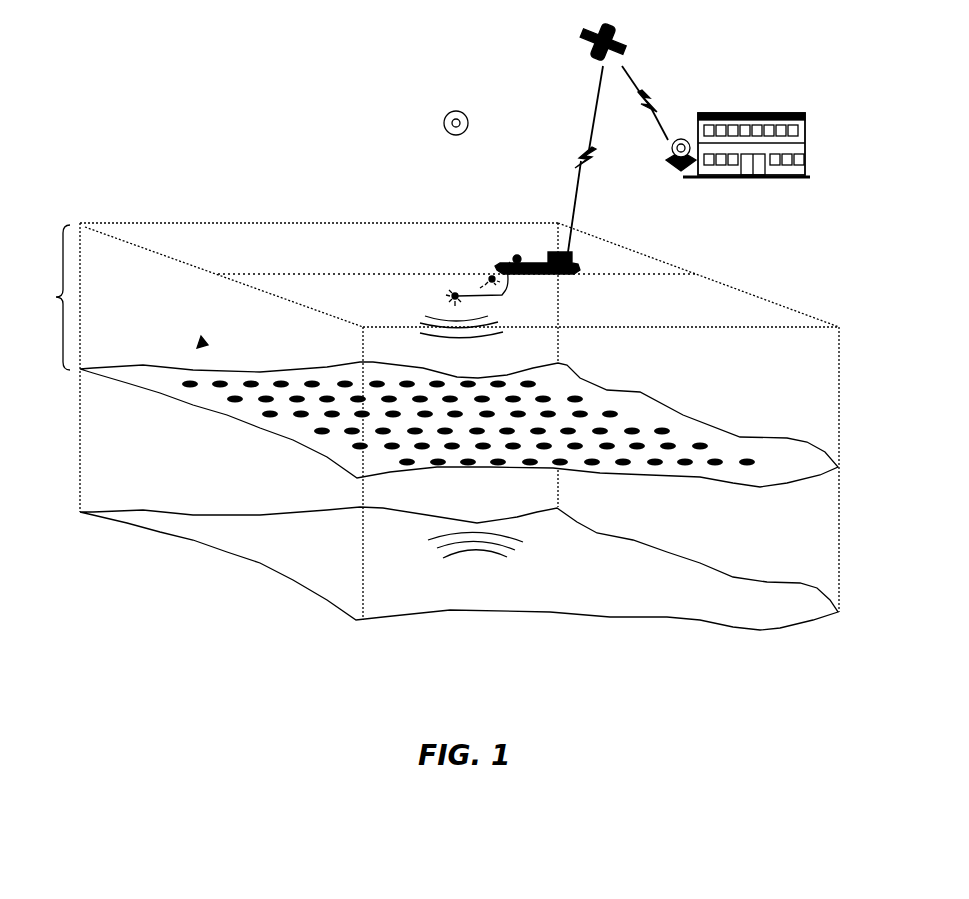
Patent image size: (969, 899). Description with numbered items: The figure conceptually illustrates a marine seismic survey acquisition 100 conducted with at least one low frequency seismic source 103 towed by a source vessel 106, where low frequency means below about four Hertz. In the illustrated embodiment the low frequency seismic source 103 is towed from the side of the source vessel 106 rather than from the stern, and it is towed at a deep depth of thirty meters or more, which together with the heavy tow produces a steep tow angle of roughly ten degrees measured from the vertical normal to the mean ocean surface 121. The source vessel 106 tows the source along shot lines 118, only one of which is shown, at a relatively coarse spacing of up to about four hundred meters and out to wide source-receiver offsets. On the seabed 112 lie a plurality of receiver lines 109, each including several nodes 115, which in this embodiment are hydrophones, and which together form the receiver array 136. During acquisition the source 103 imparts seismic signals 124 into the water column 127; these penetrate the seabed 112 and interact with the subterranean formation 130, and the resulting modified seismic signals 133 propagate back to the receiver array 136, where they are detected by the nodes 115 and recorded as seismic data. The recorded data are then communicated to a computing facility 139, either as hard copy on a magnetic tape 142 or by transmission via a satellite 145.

The marine seismic survey acquisition 100 is at (104, 54).
The low frequency seismic source 103 is at (452, 292).
The source vessel 106 is at (538, 262).
The receiver lines 109 is at (684, 444).
The seabed 112 is at (328, 455).
The nodes 115 is at (717, 468).
The shot lines 118 is at (300, 273).
The mean ocean surface 121 is at (130, 222).
The seismic signals 124 is at (425, 338).
The water column 127 is at (49, 297).
The subterranean formation 130 is at (330, 596).
The modified seismic signals 133 is at (445, 558).
The receiver array 136 is at (197, 341).
The computing facility 139 is at (806, 112).
The magnetic tape 142 is at (445, 114).
The satellite 145 is at (636, 45).